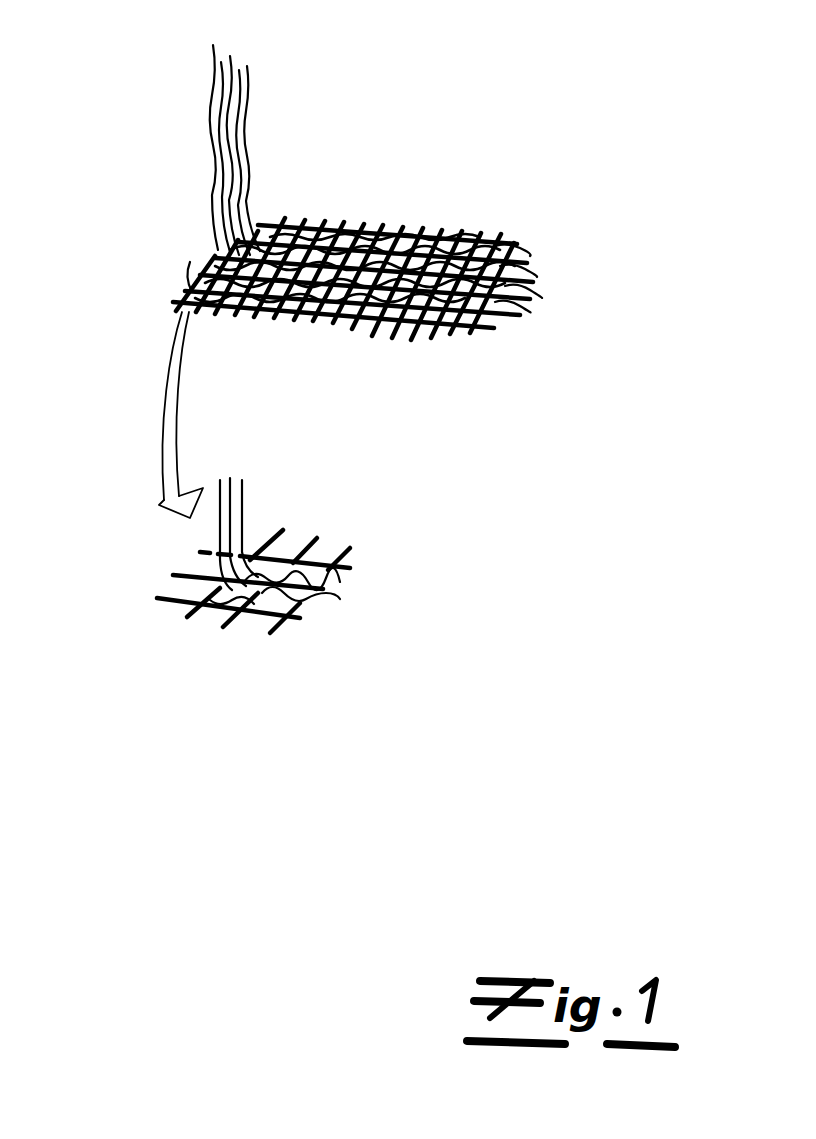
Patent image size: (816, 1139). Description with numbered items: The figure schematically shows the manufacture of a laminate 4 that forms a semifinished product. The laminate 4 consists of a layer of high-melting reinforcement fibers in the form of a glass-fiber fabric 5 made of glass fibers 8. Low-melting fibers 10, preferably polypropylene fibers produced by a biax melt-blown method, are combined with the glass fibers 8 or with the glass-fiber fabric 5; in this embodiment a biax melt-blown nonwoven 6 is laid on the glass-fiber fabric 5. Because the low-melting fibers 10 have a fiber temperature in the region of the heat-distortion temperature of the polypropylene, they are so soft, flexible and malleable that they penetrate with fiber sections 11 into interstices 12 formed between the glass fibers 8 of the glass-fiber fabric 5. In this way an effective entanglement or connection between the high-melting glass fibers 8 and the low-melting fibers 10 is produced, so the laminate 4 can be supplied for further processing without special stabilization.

The laminate 4 is at (495, 187).
The glass-fiber fabric 5 is at (376, 336).
The biax melt-blown nonwoven 6 is at (403, 243).
The glass fibers 8 is at (452, 336).
The low-melting fibers 10 is at (252, 132).
The fiber sections 11 is at (239, 623).
The interstices 12 is at (173, 575).